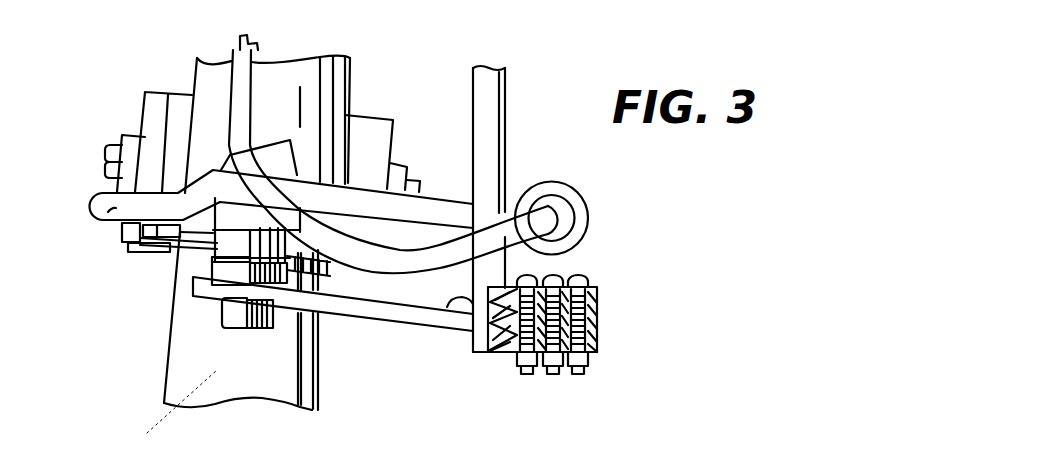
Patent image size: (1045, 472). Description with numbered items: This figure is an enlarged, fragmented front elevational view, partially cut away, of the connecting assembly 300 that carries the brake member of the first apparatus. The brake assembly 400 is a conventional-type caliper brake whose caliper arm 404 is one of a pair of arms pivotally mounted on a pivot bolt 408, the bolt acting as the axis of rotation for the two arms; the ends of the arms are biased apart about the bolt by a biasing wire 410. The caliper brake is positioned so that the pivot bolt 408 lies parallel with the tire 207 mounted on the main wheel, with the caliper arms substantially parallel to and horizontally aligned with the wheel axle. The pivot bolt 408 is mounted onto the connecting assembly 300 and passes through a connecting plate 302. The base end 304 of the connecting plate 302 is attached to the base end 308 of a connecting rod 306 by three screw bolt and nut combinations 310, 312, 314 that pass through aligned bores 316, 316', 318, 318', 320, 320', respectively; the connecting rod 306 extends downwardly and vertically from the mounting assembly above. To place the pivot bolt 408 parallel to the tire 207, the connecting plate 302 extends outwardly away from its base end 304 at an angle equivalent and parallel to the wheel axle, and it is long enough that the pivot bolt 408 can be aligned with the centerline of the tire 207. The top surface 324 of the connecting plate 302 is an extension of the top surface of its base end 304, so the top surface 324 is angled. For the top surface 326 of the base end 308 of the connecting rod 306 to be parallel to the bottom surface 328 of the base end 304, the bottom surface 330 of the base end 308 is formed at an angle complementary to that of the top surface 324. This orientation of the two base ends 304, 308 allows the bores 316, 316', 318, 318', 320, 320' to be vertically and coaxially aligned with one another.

The brake assembly 400 is at (89, 173).
The tire 207 is at (350, 62).
The connecting rod 306 is at (507, 117).
The bore 316 is at (437, 211).
The screw bolt and nut combination 310 is at (538, 273).
The bore 318 is at (620, 297).
The screw bolt and nut combination 314 is at (600, 278).
The top surface of base end of connecting rod 326 is at (600, 300).
The screw bolt and nut combination 312 is at (600, 308).
The base end of connecting rod 308 is at (600, 315).
The bore 320 is at (688, 349).
The bottom surface of base end of connecting rod 330 is at (600, 338).
The bore 320' is at (693, 388).
The base end of connecting plate 304 is at (600, 353).
The bottom surface of base end of connecting plate 328 is at (603, 360).
The bore 318' is at (580, 417).
The bore 316' is at (507, 418).
The connecting assembly 300 is at (482, 359).
The top surface of connecting plate 324 is at (455, 308).
The connecting plate 302 is at (387, 310).
The pivot bolt 408 is at (240, 310).
The biasing wire 410 is at (175, 255).
The caliper arm 404 is at (106, 212).